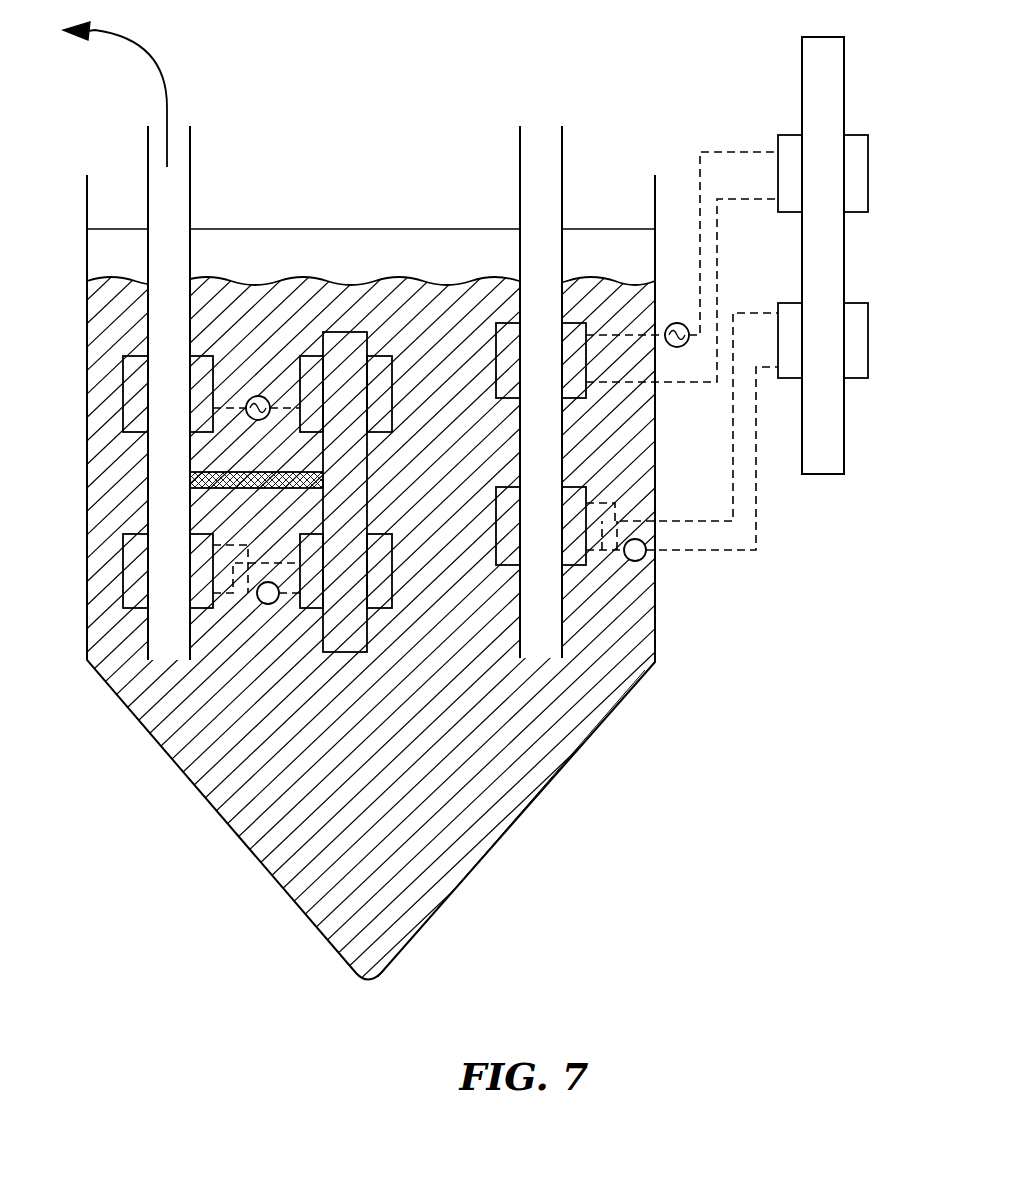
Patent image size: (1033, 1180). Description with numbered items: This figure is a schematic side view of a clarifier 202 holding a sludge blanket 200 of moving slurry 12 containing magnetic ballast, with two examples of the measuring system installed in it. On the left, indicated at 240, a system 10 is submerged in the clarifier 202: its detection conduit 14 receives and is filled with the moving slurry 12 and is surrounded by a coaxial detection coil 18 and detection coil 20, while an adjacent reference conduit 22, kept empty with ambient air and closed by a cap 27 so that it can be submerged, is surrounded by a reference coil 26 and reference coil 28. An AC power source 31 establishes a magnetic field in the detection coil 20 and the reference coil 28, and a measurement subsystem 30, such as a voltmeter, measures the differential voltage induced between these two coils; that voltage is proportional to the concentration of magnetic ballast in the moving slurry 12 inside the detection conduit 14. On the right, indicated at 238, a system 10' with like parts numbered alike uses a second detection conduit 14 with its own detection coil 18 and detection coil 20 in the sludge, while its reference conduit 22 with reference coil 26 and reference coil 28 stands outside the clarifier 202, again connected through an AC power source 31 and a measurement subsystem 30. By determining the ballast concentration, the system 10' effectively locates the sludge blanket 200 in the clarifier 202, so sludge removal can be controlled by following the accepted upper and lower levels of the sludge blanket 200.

The system 10 is at (255, 71).
The system 10' is at (624, 61).
The moving slurry 12 is at (388, 887).
The detection conduit 14 is at (178, 660).
The detection coil 18 is at (142, 354).
The detection coil 20 is at (136, 609).
The reference conduit 22 is at (349, 653).
The reference coil 26 is at (374, 355).
The cap 27 is at (345, 330).
The reference coil 28 is at (380, 609).
The measurement subsystem 30 is at (271, 605).
The AC power source 31 is at (258, 396).
The sludge blanket 200 is at (253, 828).
The clarifier 202 is at (177, 772).
The system installation 238 is at (716, 606).
The submerged system installation 240 is at (116, 452).